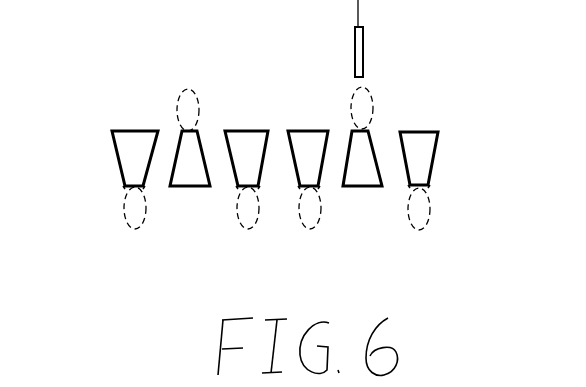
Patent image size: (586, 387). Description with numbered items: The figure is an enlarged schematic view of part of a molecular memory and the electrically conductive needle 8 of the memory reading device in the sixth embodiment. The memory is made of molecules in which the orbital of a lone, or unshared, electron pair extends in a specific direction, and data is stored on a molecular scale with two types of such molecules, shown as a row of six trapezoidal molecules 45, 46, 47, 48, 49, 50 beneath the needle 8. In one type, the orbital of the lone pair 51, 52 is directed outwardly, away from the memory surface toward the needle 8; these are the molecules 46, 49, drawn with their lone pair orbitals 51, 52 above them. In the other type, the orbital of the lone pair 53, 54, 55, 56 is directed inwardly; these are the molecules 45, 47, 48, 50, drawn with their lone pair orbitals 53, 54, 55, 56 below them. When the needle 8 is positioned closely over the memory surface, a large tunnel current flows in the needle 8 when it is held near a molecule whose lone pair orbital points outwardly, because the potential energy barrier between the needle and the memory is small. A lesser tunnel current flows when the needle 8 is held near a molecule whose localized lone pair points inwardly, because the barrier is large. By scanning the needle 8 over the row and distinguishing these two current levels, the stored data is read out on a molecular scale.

The electrically conductive needle 8 is at (363, 38).
The molecule having outwardly directed lone pair orbital 45 is at (430, 150).
The molecule having outwardly directed lone pair orbital 46 is at (370, 187).
The molecule having inwardly directed lone pair orbital 47 is at (308, 143).
The molecule having inwardly directed lone pair orbital 48 is at (243, 142).
The molecule having outwardly directed lone pair orbital 49 is at (190, 187).
The molecule having inwardly directed lone pair orbital 50 is at (132, 153).
The outwardly directed lone pair orbital 51 is at (363, 103).
The outwardly directed lone pair orbital 52 is at (188, 100).
The inwardly directed lone pair orbital 53 is at (307, 218).
The inwardly directed lone pair orbital 54 is at (423, 202).
The inwardly directed lone pair orbital 55 is at (130, 230).
The inwardly directed lone pair orbital 56 is at (248, 230).